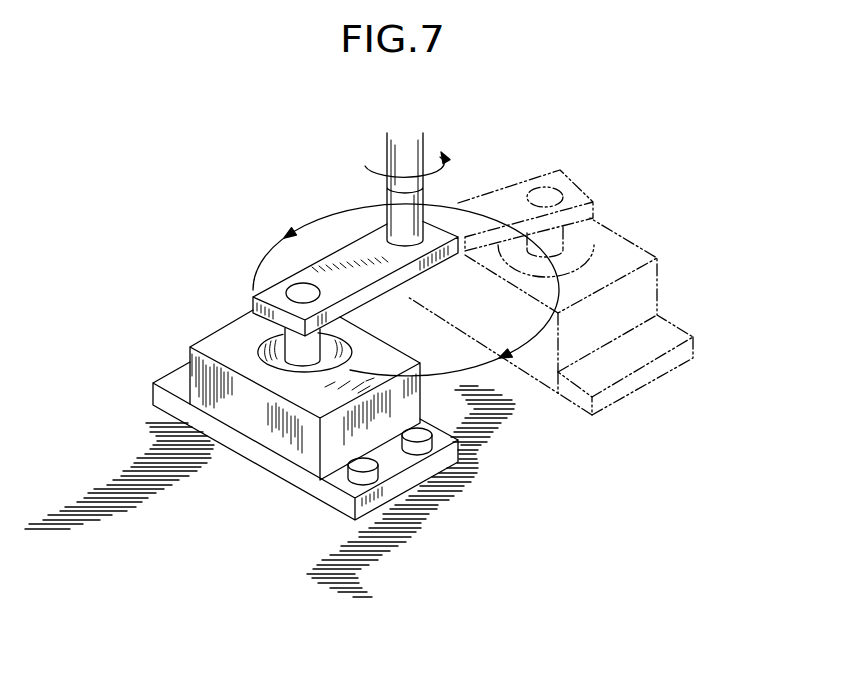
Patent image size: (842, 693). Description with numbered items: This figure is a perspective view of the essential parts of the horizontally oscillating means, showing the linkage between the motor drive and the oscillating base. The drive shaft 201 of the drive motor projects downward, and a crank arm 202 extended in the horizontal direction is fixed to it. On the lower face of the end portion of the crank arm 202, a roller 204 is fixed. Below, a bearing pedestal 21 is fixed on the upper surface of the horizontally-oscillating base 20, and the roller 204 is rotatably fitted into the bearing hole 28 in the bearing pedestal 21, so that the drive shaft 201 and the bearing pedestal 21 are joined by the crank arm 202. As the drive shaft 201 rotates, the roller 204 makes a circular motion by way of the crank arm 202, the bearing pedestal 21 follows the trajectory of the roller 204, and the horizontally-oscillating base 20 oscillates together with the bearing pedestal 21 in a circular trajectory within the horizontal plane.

The horizontally-oscillating base 20 is at (128, 473).
The bearing pedestal 21 is at (288, 458).
The bearing hole 28 is at (268, 370).
The roller 204 is at (283, 347).
The crank arm 202 is at (350, 253).
The drive shaft 201 is at (403, 142).